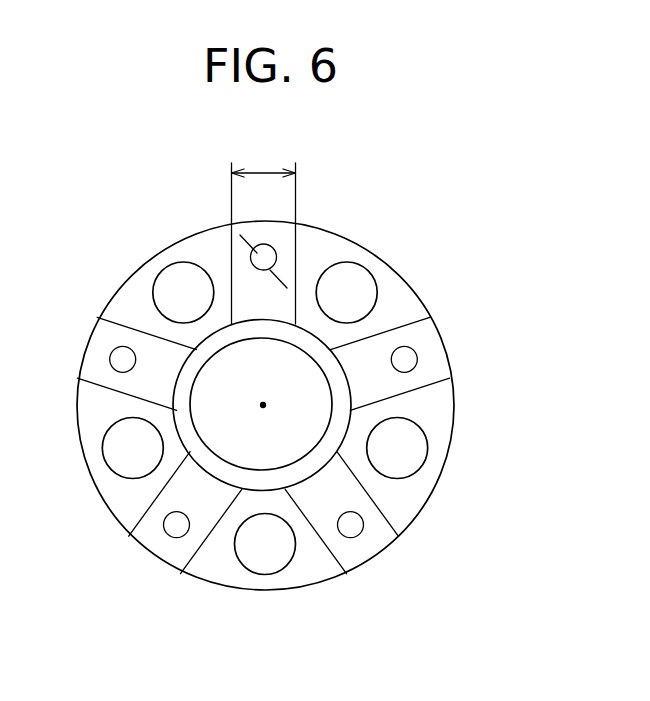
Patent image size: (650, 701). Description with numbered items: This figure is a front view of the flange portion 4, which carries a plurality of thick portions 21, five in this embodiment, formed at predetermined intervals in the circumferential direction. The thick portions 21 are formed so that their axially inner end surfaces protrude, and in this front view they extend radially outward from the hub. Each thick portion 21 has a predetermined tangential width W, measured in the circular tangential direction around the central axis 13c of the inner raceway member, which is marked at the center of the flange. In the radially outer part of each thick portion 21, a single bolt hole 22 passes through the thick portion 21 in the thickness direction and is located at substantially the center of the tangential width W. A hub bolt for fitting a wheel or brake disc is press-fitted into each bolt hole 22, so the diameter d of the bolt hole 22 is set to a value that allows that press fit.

The flange portion 4 is at (452, 299).
The thick portion 21 is at (297, 262).
The bolt hole 22 is at (275, 253).
The central axis 13c is at (263, 408).
The tangential width W is at (265, 173).
The diameter d is at (288, 287).